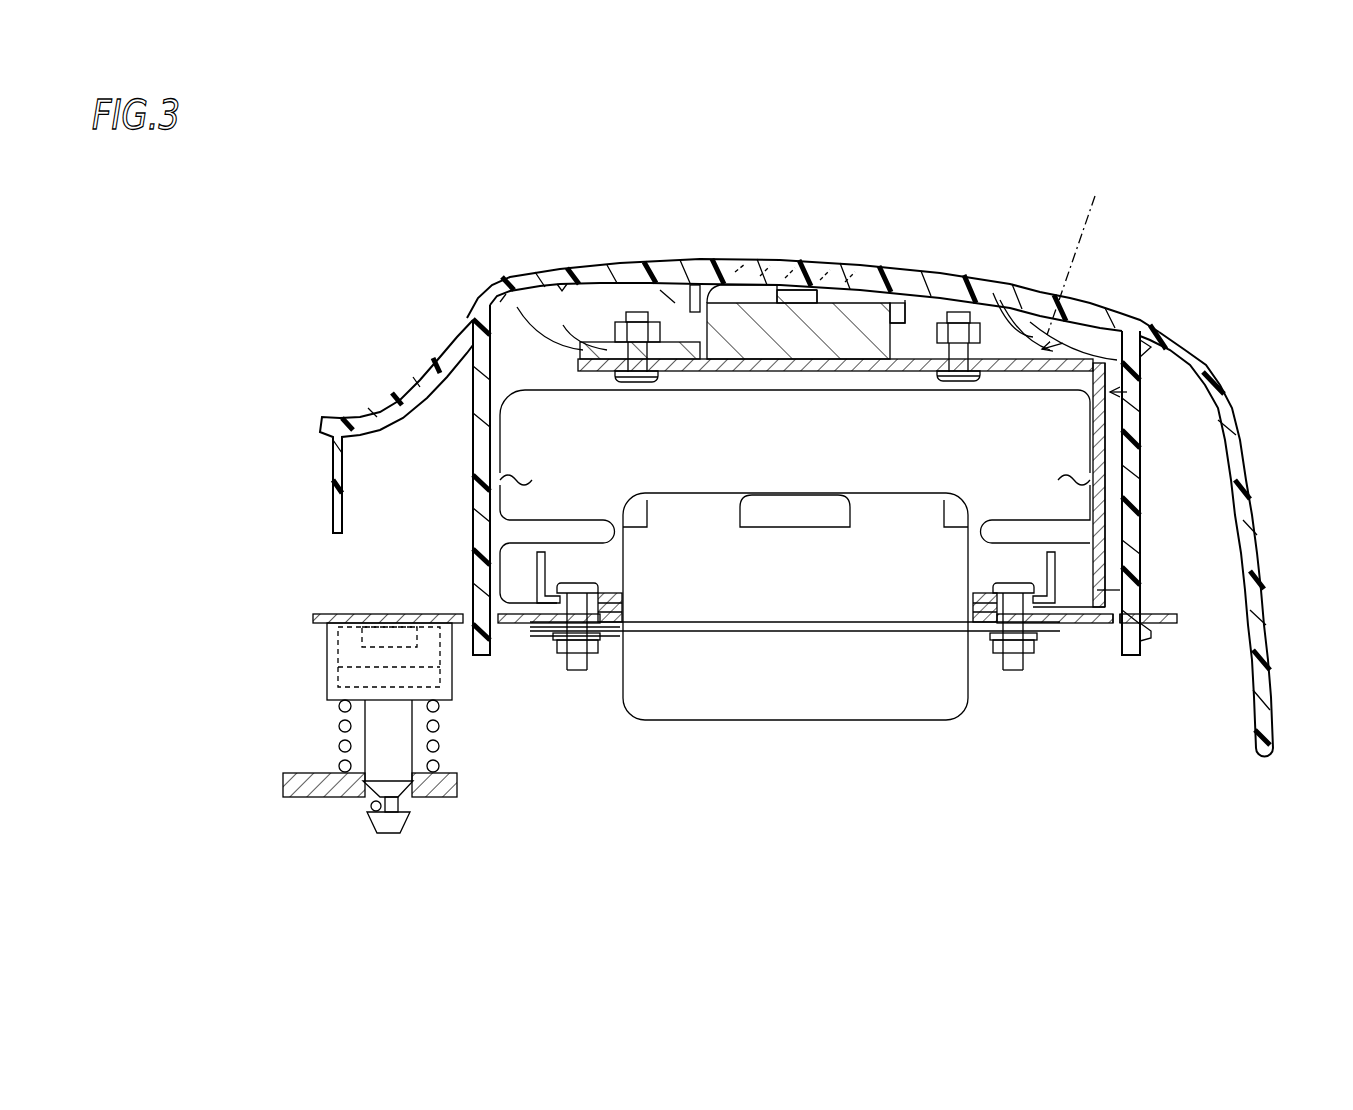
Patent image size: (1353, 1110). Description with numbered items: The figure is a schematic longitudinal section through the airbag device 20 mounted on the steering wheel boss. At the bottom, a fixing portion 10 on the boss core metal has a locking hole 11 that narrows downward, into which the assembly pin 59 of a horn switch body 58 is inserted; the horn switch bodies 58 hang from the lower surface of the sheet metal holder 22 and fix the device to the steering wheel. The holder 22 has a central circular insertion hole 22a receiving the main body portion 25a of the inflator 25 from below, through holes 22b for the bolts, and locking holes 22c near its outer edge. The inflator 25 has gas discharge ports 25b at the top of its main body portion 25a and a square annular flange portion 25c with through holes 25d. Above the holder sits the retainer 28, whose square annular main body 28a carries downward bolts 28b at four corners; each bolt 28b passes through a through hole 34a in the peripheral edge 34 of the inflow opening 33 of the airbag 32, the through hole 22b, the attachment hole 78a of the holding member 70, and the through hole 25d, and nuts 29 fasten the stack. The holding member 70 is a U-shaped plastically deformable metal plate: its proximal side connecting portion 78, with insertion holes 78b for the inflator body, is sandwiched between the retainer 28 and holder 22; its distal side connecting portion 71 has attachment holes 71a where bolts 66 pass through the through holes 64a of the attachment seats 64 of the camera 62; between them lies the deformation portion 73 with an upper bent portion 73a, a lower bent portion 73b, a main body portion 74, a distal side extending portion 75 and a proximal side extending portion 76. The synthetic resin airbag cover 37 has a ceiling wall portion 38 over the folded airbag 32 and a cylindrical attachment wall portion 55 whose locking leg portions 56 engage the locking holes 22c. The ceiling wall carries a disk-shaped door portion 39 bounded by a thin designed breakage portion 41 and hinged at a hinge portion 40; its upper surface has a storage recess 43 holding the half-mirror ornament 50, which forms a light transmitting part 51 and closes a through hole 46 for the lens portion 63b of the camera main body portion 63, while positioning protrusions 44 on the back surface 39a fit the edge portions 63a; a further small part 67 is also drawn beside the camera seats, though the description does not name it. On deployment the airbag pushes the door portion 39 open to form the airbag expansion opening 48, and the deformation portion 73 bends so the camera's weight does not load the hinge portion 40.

The fixing portion 10 is at (305, 810).
The locking hole 11 is at (368, 795).
The airbag device 20 is at (367, 308).
The holder 22 is at (317, 614).
The insertion hole 22a is at (650, 624).
The through hole 22b is at (585, 640).
The locking hole 22c is at (1120, 624).
The inflator 25 is at (812, 737).
The main body portion 25a is at (862, 712).
The gas discharge ports 25b is at (793, 524).
The flange portion 25c is at (777, 624).
The through hole 25d is at (608, 633).
The retainer 28 is at (538, 558).
The main body 28a is at (607, 593).
The bolts 28b is at (576, 670).
The nuts 29 is at (557, 647).
The airbag 32 is at (1078, 416).
The inflow opening 33 is at (975, 600).
The peripheral edge 34 is at (557, 630).
The through holes 34a is at (577, 585).
The airbag cover 37 is at (555, 160).
The ceiling wall portion 38 is at (487, 345).
The door portion 39 is at (1017, 315).
The back surface 39a is at (1063, 343).
The hinge portion 40 is at (1150, 312).
The designed breakage portion 41 is at (570, 255).
The storage recess 43 is at (762, 300).
The positioning protrusions 44 is at (695, 300).
The through hole 46 is at (805, 290).
The airbag expansion opening 48 is at (1077, 249).
The ornament 50 is at (855, 268).
The light transmitting part 51 is at (822, 283).
The attachment wall portion 55 is at (440, 355).
The locking leg portions 56 is at (1142, 632).
The horn switch body 58 is at (327, 660).
The assembly pin 59 is at (388, 823).
The camera 62 is at (730, 326).
The main body portion 63 is at (872, 285).
The edge portions 63a is at (668, 300).
The lens portion 63b is at (790, 303).
The attachment seats 64 is at (503, 298).
The through holes 64a is at (605, 342).
The bolts 66 is at (637, 330).
The clip 67 is at (690, 286).
The holding member 70 is at (1114, 493).
The distal side connecting portion 71 is at (770, 369).
The attachment hole 71a is at (630, 380).
The deformation portion 73 is at (1141, 369).
The upper bent portion 73a is at (1172, 338).
The lower bent portion 73b is at (1137, 604).
The main body portion 74 is at (1105, 466).
The distal side extending portion 75 is at (1128, 335).
The proximal side extending portion 76 is at (1100, 590).
The proximal side connecting portion 78 is at (975, 610).
The attachment hole 78a is at (622, 608).
The insertion holes 78b is at (972, 612).